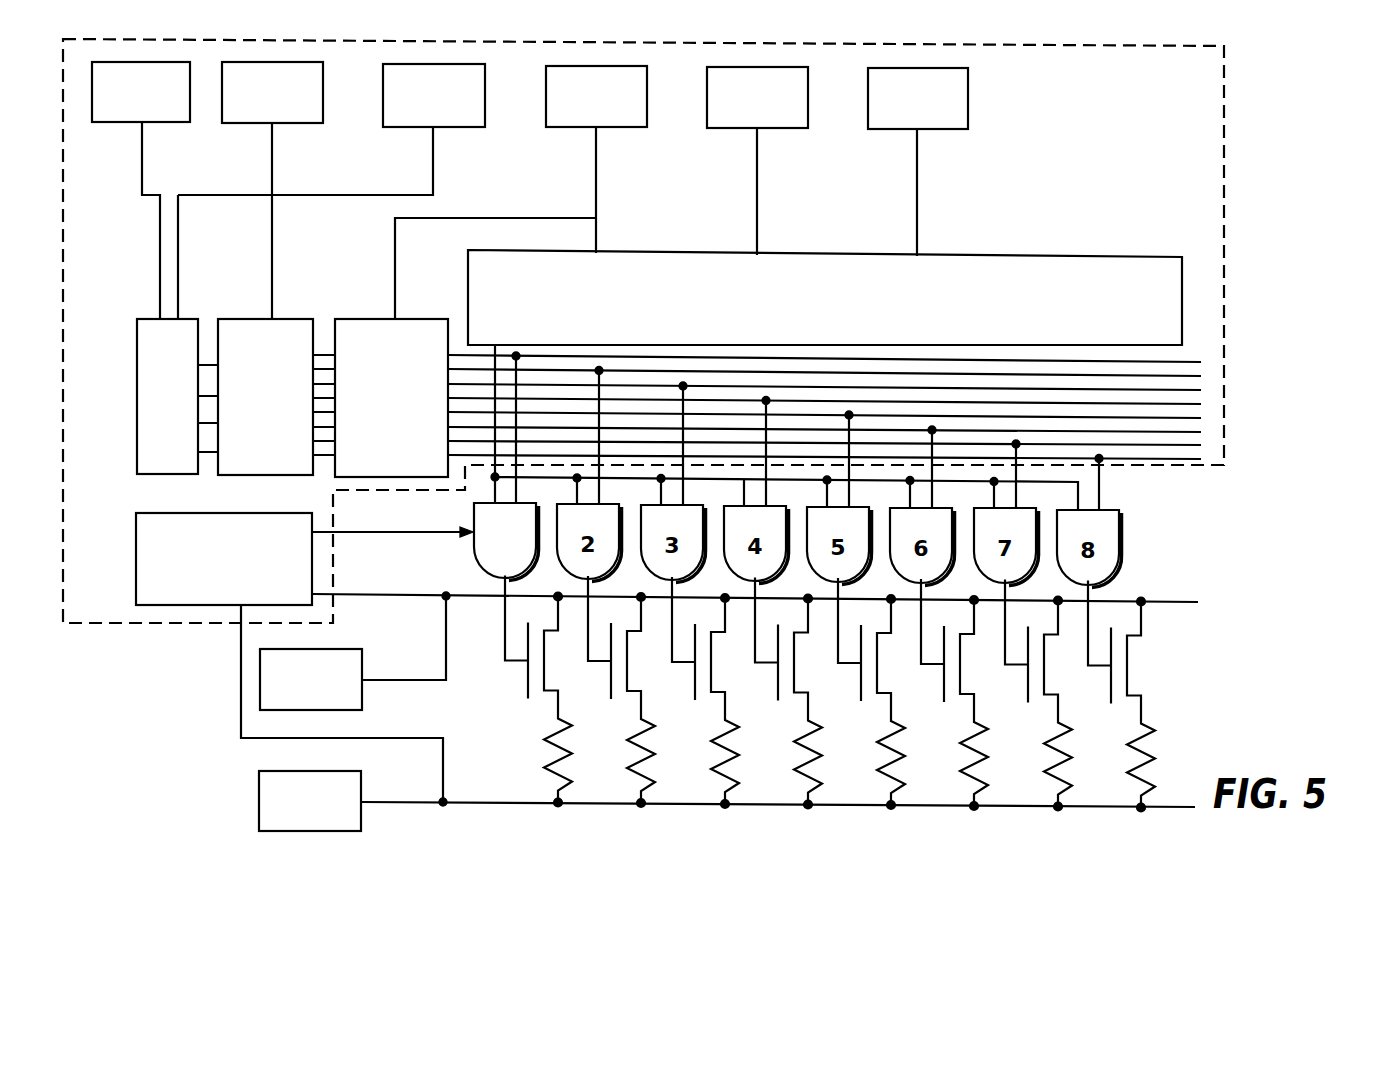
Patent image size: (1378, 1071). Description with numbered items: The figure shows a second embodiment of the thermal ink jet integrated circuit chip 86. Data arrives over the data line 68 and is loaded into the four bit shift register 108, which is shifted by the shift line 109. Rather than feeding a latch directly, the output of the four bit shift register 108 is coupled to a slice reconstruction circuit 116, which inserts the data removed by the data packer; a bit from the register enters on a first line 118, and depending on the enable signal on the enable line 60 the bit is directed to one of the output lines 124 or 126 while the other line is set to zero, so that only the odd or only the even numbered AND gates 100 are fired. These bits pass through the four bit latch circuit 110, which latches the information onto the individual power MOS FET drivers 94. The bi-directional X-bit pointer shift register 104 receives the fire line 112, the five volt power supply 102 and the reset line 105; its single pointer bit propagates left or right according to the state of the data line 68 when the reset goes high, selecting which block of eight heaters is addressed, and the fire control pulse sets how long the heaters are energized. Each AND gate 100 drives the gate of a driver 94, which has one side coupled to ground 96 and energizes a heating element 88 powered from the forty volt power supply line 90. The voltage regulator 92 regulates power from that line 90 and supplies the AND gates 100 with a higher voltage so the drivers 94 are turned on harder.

The thermal ink jet integrated circuit chip 86 is at (1275, 611).
The shift line 109 is at (165, 122).
The enable line 60 is at (297, 123).
The data line 68 is at (458, 127).
The fire line 112 is at (620, 127).
The five volt power supply 102 is at (785, 128).
The reset line 105 is at (933, 129).
The bi-directional X-bit pointer shift register 104 is at (1047, 255).
The four bit shift register 108 is at (147, 319).
The slice reconstruction circuit 116 is at (253, 319).
The first line 118 is at (208, 333).
The output line 124 is at (327, 334).
The output line 126 is at (337, 346).
The four bit latch circuit 110 is at (421, 319).
The voltage regulator 92 is at (136, 559).
The AND gate 100 is at (472, 545).
The ground 96 is at (362, 667).
The 40 volt power supply line 90 is at (361, 818).
The power MOS FET driver 94 is at (528, 690).
The thermal ink jet heating element 88 is at (1150, 758).